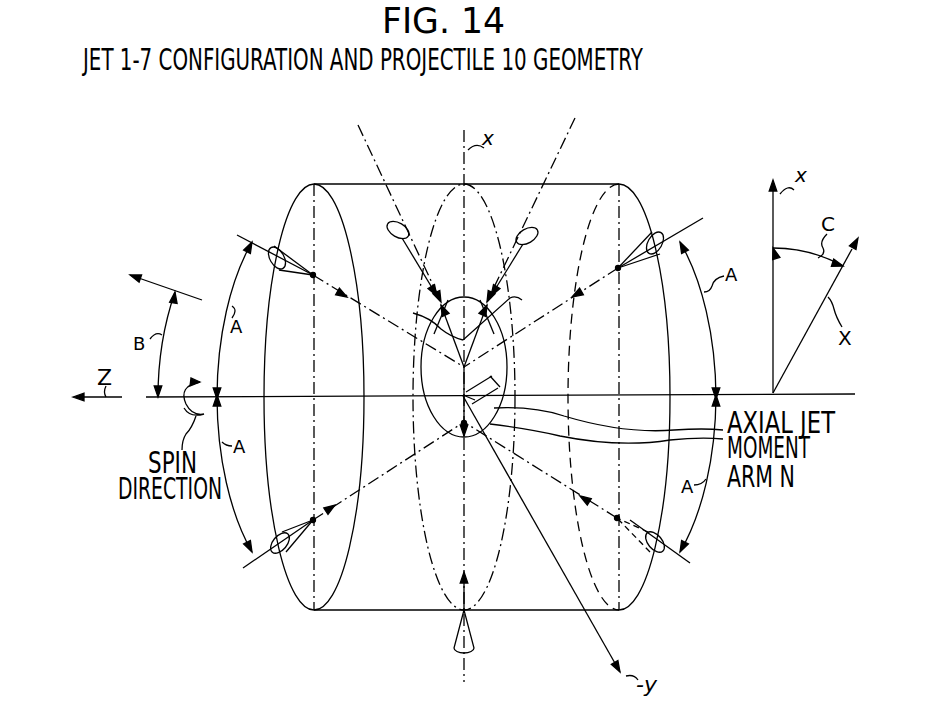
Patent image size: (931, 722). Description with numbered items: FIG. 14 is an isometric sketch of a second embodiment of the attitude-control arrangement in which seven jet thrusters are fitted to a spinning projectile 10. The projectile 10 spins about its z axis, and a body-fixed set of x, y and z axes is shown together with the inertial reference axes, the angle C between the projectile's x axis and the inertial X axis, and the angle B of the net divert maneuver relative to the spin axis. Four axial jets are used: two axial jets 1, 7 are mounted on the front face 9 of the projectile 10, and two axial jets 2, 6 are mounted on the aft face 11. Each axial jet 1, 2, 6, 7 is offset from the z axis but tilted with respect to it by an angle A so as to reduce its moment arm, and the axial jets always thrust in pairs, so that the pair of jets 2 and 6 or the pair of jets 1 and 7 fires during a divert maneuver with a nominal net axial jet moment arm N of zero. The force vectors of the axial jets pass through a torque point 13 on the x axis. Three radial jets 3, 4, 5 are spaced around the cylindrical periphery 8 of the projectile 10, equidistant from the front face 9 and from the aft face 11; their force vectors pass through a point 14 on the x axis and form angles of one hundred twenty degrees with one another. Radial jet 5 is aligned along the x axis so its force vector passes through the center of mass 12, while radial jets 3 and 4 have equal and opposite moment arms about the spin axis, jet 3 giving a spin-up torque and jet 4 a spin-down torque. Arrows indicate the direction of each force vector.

The axial jet 1 is at (273, 249).
The axial jet 2 is at (658, 236).
The radial jet 3 is at (135, 418).
The radial jet 4 is at (398, 216).
The radial jet 5 is at (478, 650).
The axial jet 6 is at (665, 533).
The axial jet 7 is at (268, 538).
The cylindrical periphery 8 is at (500, 184).
The front face 9 is at (285, 483).
The projectile 10 is at (358, 612).
The aft face 11 is at (639, 358).
The center of mass 12 is at (445, 430).
The torque point 13 is at (426, 314).
The point 14 is at (504, 311).